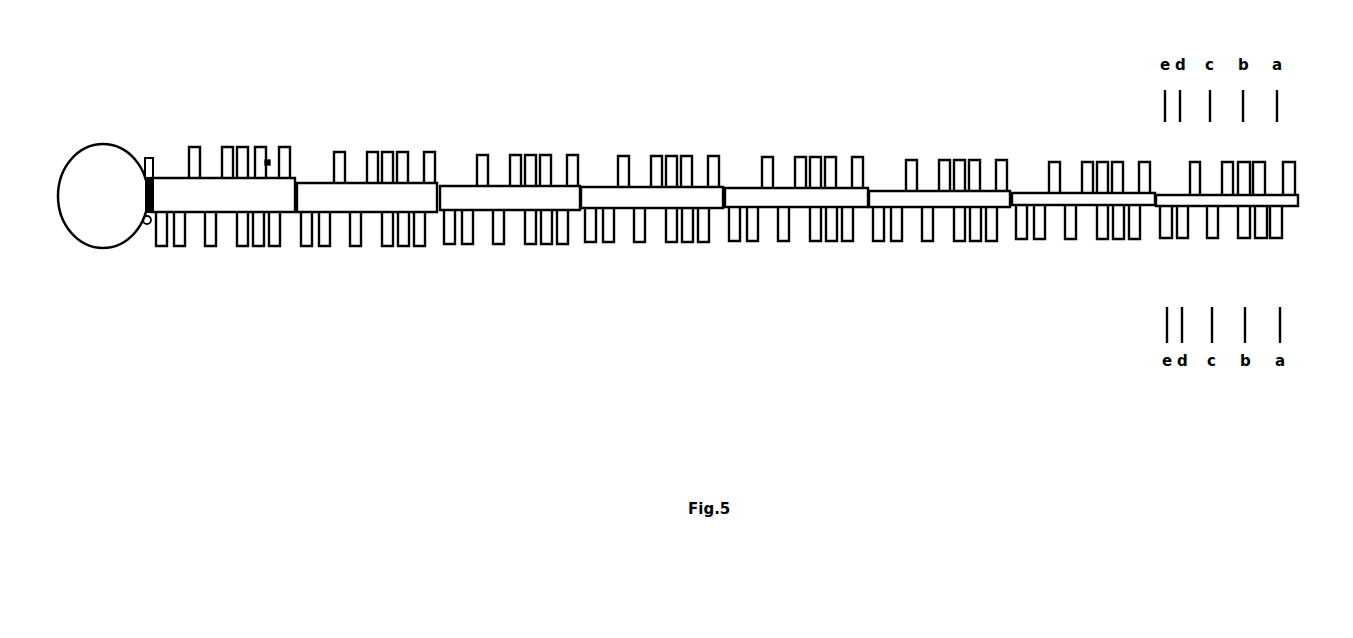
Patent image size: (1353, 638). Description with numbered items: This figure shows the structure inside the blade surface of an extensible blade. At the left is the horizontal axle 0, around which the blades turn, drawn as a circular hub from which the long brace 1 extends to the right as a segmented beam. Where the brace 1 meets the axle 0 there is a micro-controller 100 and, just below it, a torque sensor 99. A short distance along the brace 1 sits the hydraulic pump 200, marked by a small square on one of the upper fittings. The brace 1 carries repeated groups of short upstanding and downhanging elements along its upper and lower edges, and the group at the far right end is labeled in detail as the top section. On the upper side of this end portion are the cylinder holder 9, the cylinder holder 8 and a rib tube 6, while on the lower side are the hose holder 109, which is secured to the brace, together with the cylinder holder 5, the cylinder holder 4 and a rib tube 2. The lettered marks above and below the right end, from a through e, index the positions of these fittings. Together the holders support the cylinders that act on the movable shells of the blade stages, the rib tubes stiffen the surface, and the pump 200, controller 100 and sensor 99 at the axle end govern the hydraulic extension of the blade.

The horizontal axle 0 is at (95, 155).
The micro-controller 100 is at (152, 160).
The hydraulic pump 200 is at (270, 160).
The torque sensor 99 is at (148, 224).
The brace 1 is at (596, 196).
The cylinder holder 8 is at (1230, 181).
The cylinder holder 9 is at (1191, 170).
The rib tube 6 is at (1292, 166).
The rib tube 2 is at (1279, 221).
The hose holder 109 is at (1164, 236).
The cylinder holder 5 is at (1181, 236).
The cylinder holder 4 is at (1211, 236).